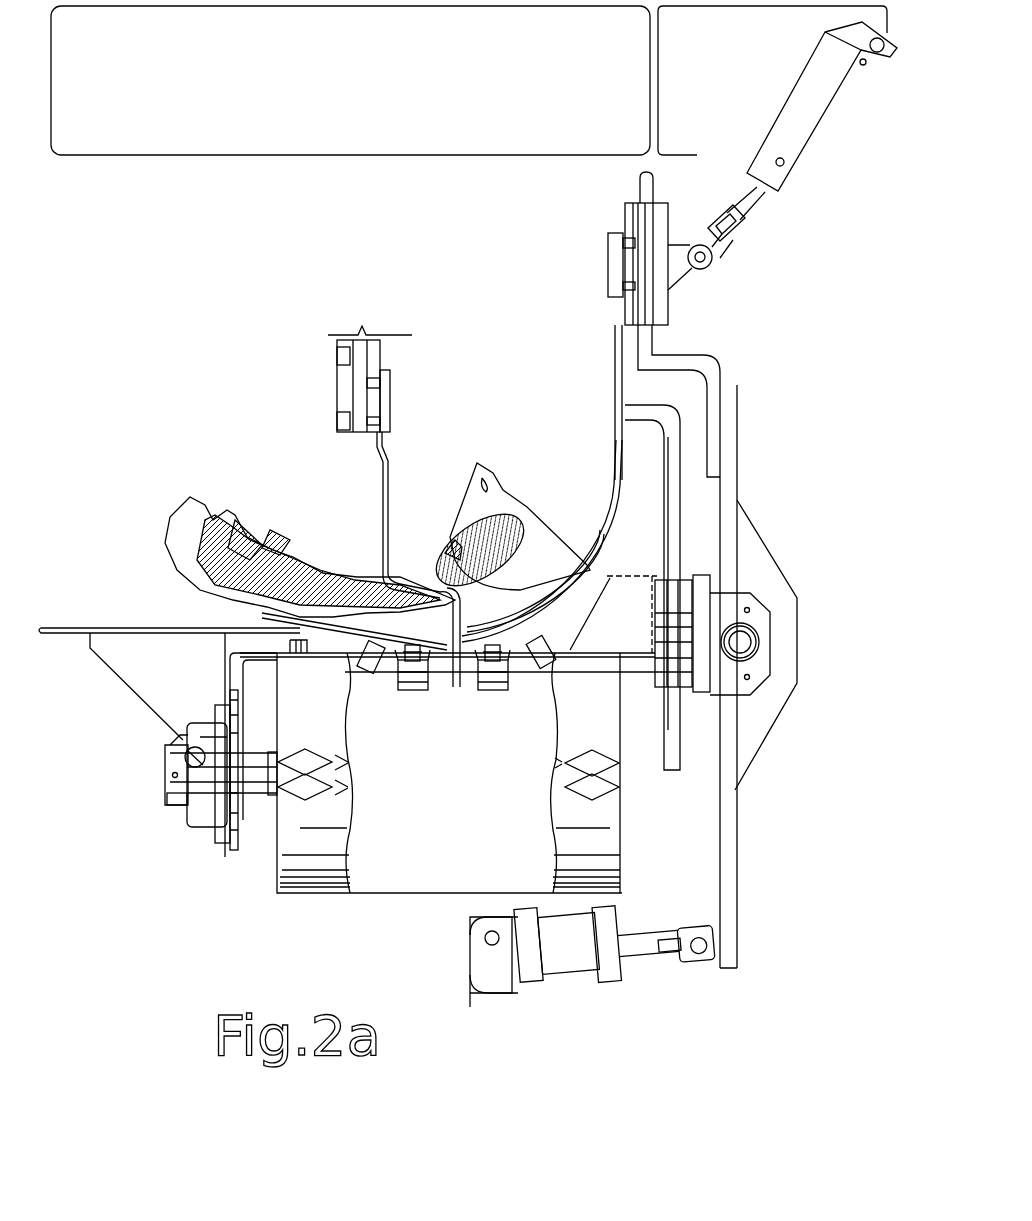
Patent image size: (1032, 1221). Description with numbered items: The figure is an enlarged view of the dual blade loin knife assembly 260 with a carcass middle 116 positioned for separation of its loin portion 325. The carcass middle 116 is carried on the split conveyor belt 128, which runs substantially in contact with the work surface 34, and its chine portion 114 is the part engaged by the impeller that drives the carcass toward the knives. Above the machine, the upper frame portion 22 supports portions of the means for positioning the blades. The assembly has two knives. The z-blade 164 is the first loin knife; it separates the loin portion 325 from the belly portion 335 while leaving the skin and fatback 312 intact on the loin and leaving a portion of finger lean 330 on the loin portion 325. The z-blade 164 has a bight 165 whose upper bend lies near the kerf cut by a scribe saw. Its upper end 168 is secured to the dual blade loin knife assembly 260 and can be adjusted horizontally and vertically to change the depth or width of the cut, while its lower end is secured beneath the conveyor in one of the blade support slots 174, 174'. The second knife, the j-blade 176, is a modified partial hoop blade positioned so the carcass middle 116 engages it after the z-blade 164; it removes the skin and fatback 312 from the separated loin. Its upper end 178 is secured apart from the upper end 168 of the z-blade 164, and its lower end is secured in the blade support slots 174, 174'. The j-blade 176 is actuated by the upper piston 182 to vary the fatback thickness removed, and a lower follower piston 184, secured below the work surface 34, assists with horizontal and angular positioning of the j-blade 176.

The upper frame portion 22 is at (416, 79).
The upper piston 182 is at (810, 136).
The upper end of the j-blade 178 is at (617, 433).
The j-blade 176 is at (680, 512).
The carcass middle 116 is at (537, 496).
The chine portion 114 is at (492, 468).
The finger lean 330 is at (408, 556).
The loin portion 325 is at (450, 527).
The skin and fatback 312 is at (557, 589).
The belly portion 335 is at (245, 512).
The bight 165 is at (383, 573).
The dual blade loin knife assembly 260 is at (306, 353).
The upper end of the z-blade 168 is at (373, 442).
The z-blade 164 is at (385, 483).
The blade support slot 174 is at (404, 687).
The blade support slot 174' is at (508, 684).
The work surface 34 is at (297, 625).
The split conveyor belt 128 is at (280, 866).
The lower piston 184 is at (572, 958).